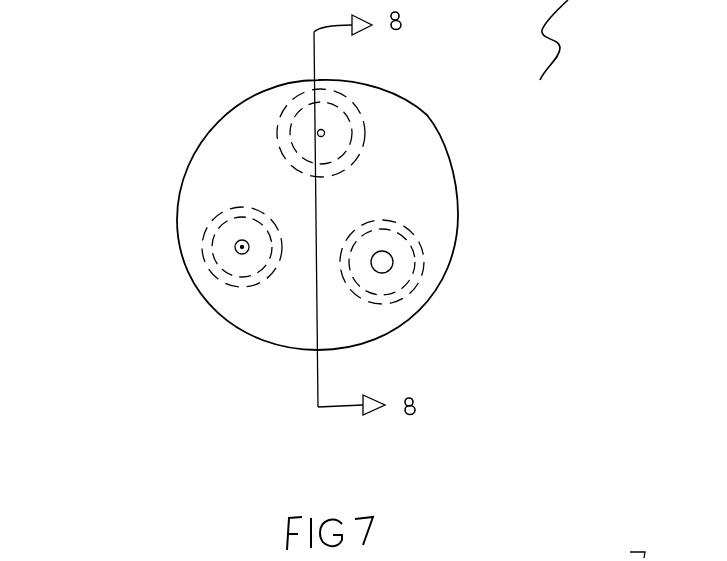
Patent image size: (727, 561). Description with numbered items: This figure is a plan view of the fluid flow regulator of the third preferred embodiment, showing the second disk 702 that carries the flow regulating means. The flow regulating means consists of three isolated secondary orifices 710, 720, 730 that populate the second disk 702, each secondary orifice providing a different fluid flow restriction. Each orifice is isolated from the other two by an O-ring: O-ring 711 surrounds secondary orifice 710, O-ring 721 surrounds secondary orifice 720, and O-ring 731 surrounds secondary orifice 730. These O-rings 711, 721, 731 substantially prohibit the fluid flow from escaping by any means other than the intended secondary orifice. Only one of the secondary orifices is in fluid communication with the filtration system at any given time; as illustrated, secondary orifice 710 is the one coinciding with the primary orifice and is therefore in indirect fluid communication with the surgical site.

The second disk 702 is at (433, 193).
The secondary orifice 710 is at (318, 131).
The O-ring 711 is at (277, 124).
The secondary orifice 720 is at (238, 250).
The O-ring 721 is at (200, 242).
The secondary orifice 730 is at (385, 263).
The O-ring 731 is at (378, 297).